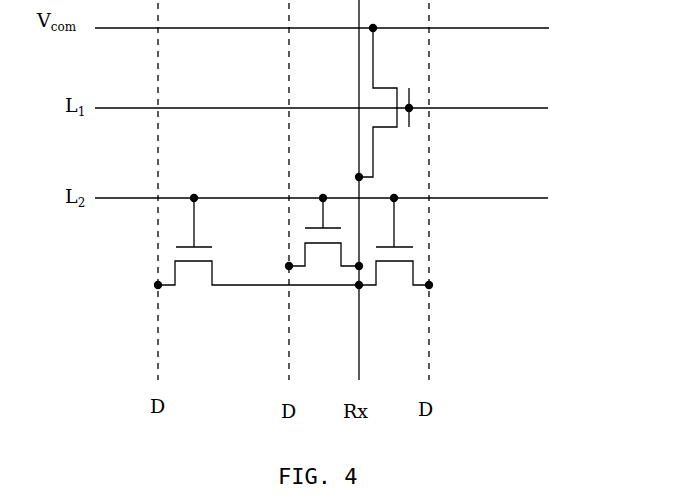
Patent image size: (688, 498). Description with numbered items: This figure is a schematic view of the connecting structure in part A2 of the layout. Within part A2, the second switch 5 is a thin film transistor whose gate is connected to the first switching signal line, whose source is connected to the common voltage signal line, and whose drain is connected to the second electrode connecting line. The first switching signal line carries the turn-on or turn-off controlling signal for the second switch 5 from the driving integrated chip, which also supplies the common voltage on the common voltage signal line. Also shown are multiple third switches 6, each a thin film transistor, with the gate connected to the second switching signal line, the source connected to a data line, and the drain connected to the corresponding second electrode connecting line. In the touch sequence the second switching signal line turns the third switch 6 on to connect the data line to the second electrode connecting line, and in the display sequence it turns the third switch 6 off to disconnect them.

The second switch 5 is at (406, 140).
The third switch 6 is at (168, 257).
The part A2 is at (502, 284).